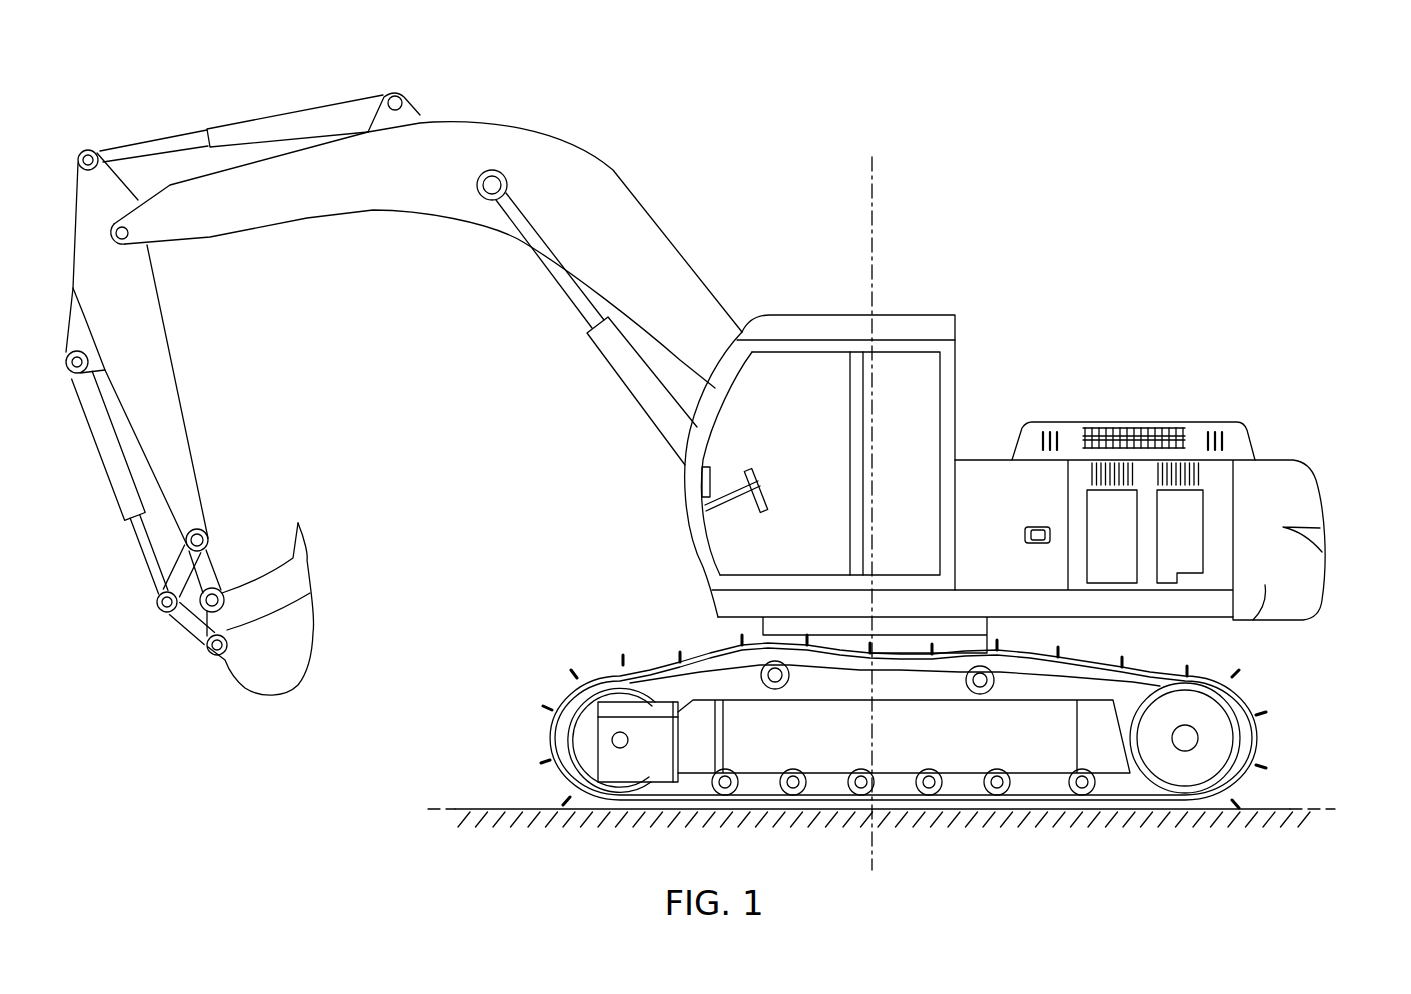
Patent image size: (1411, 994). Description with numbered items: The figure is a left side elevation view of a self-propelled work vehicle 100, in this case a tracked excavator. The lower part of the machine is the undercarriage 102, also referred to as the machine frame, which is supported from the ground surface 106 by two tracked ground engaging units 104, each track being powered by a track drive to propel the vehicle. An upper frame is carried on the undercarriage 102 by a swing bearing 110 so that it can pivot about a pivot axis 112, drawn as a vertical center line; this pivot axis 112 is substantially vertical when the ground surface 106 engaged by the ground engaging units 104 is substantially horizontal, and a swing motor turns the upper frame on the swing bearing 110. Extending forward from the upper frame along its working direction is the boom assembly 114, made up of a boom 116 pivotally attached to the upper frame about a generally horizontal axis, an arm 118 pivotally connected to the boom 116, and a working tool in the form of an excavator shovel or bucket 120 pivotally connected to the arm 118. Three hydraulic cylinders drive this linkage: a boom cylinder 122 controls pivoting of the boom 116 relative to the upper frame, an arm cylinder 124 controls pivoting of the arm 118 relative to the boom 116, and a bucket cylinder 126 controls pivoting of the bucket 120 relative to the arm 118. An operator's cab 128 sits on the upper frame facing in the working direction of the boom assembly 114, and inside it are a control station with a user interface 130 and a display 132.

The work vehicle 100 is at (1078, 118).
The undercarriage 102 is at (897, 680).
The tracked ground engaging units 104 is at (1267, 738).
The ground surface 106 is at (1290, 808).
The swing bearing 110 is at (717, 637).
The pivot axis 112 is at (873, 208).
The boom assembly 114 is at (618, 173).
The boom 116 is at (610, 283).
The arm 118 is at (158, 385).
The bucket 120 is at (258, 663).
The boom cylinder 122 is at (617, 352).
The arm cylinder 124 is at (253, 130).
The bucket cylinder 126 is at (115, 463).
The operator's cab 128 is at (915, 323).
The user interface 130 is at (770, 490).
The display 132 is at (718, 470).